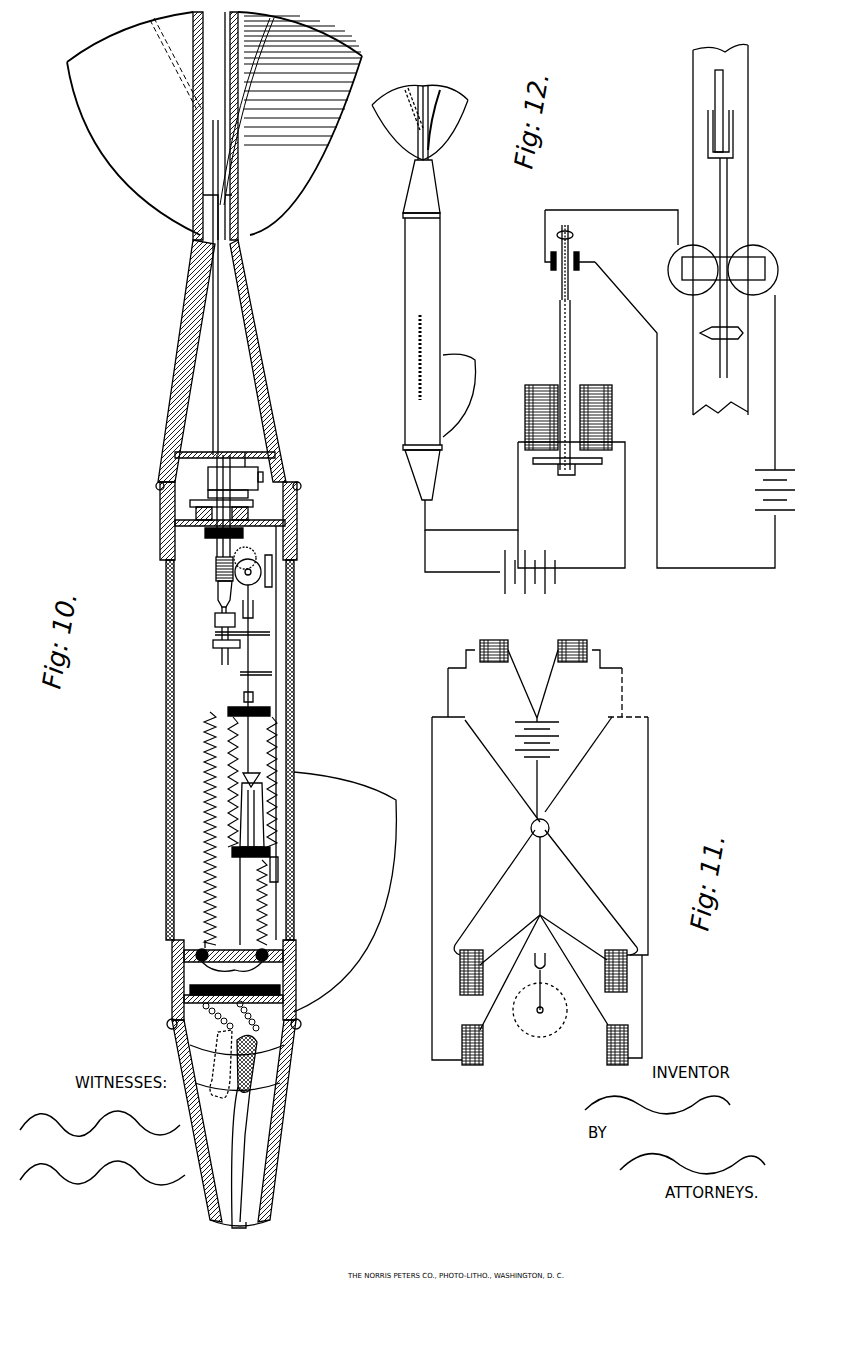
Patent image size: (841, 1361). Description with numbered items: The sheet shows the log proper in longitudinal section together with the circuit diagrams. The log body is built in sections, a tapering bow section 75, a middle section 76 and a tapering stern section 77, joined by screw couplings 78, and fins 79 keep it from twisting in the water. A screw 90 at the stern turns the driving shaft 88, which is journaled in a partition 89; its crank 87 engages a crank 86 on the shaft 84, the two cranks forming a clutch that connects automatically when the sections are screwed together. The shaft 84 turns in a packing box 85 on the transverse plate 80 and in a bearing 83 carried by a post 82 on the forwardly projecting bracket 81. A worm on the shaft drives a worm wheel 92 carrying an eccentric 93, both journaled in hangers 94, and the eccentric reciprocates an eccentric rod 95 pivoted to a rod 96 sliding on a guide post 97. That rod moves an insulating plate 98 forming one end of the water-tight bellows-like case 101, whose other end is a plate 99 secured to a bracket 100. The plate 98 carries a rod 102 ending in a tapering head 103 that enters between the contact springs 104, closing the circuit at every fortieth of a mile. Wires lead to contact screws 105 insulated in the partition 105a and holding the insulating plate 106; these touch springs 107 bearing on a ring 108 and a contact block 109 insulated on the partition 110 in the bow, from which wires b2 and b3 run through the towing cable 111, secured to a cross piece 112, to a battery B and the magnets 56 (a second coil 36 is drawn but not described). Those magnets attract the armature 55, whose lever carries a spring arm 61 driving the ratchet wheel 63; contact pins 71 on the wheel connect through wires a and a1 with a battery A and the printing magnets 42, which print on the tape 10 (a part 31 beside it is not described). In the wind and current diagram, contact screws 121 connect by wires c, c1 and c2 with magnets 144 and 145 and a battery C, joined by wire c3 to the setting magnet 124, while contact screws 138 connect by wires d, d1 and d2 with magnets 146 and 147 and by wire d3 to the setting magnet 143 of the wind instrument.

In FIG. 10, the screw 90 is at (214, 123).
In FIG. 12, the screw 90 is at (420, 122).
In FIG. 10, the partition 89 is at (212, 447).
In FIG. 10, the driving shaft 88 is at (203, 287).
In FIG. 10, the stern section 77 is at (182, 376).
In FIG. 12, the stern section 77 is at (412, 193).
In FIG. 10, the middle section 76 is at (167, 660).
In FIG. 12, the middle section 76 is at (406, 284).
In FIG. 10, the screw couplings 78 is at (159, 522).
In FIG. 10, the crank 87 is at (247, 450).
In FIG. 10, the crank 86 is at (210, 486).
In FIG. 10, the packing box 85 is at (213, 511).
In FIG. 10, the transverse plate 80 is at (216, 556).
In FIG. 10, the shaft 84 is at (214, 586).
In FIG. 10, the bearing 83 is at (214, 614).
In FIG. 10, the post 82 is at (262, 637).
In FIG. 10, the eccentric 93 is at (256, 562).
In FIG. 10, the hangers 94 is at (261, 574).
In FIG. 10, the worm wheel 92 is at (262, 556).
In FIG. 10, the bracket 81 is at (258, 615).
In FIG. 10, the eccentric rod 95 is at (254, 622).
In FIG. 10, the guide post 97 is at (266, 680).
In FIG. 10, the rod 96 is at (246, 696).
In FIG. 10, the insulating plate 98 is at (226, 708).
In FIG. 10, the case 101 is at (215, 828).
In FIG. 10, the contact springs 104 is at (219, 782).
In FIG. 10, the rod 102 is at (268, 748).
In FIG. 10, the tapering head 103 is at (262, 817).
In FIG. 10, the plate 99 is at (253, 901).
In FIG. 10, the bracket 100 is at (264, 912).
In FIG. 10, the fins 79 is at (345, 892).
In FIG. 12, the fins 79 is at (416, 340).
In FIG. 10, the springs 107 is at (180, 955).
In FIG. 10, the insulating plate 106 is at (208, 950).
In FIG. 10, the contact screws 105 is at (258, 950).
In FIG. 10, the partition 105a is at (204, 948).
In FIG. 10, the ring 108 is at (282, 988).
In FIG. 10, the bow section 75 is at (186, 1052).
In FIG. 12, the bow section 75 is at (410, 475).
In FIG. 10, the partition 110 is at (258, 1032).
In FIG. 10, the contact block 109 is at (275, 1062).
In FIG. 10, the cross piece 112 is at (268, 1074).
In FIG. 10, the towing cable 111 is at (247, 1125).
In FIG. 10, the wire b2 is at (191, 1037).
In FIG. 12, the wire b2 is at (462, 572).
In FIG. 10, the wire b3 is at (217, 1013).
In FIG. 12, the wire b3 is at (462, 530).
In FIG. 12, the ratchet wheel 63 is at (551, 266).
In FIG. 12, the battery B is at (530, 570).
In FIG. 12, the coil 36 is at (527, 412).
In FIG. 12, the magnets 56 is at (606, 417).
In FIG. 12, the armature 55 is at (590, 466).
In FIG. 12, the spring arm 61 is at (560, 316).
In FIG. 12, the contact pins 71 is at (562, 240).
In FIG. 12, the wire a is at (630, 300).
In FIG. 12, the wire a1 is at (634, 209).
In FIG. 12, the tape 10 is at (693, 78).
In FIG. 12, the rod 31 is at (718, 192).
In FIG. 12, the printing magnets 42 is at (682, 272).
In FIG. 12, the battery A is at (761, 490).
In FIG. 11, the setting magnet 124 is at (492, 640).
In FIG. 11, the setting magnet 143 is at (568, 640).
In FIG. 11, the wire c3 is at (518, 662).
In FIG. 11, the wire d3 is at (548, 655).
In FIG. 11, the contact screws 121 is at (448, 698).
In FIG. 11, the contact screws 138 is at (622, 702).
In FIG. 11, the wire c is at (432, 760).
In FIG. 11, the wire d is at (648, 778).
In FIG. 11, the wire c1 is at (505, 772).
In FIG. 11, the wire d1 is at (577, 748).
In FIG. 11, the battery C is at (526, 768).
In FIG. 11, the wire d2 is at (510, 936).
In FIG. 11, the wire c2 is at (527, 935).
In FIG. 11, the magnet 147 is at (458, 973).
In FIG. 11, the magnet 146 is at (608, 945).
In FIG. 11, the magnet 144 is at (484, 1040).
In FIG. 11, the magnet 145 is at (606, 1030).